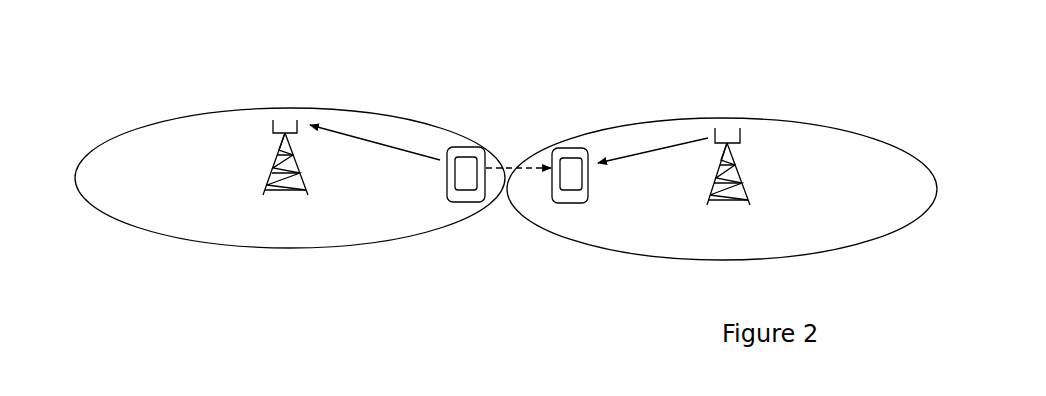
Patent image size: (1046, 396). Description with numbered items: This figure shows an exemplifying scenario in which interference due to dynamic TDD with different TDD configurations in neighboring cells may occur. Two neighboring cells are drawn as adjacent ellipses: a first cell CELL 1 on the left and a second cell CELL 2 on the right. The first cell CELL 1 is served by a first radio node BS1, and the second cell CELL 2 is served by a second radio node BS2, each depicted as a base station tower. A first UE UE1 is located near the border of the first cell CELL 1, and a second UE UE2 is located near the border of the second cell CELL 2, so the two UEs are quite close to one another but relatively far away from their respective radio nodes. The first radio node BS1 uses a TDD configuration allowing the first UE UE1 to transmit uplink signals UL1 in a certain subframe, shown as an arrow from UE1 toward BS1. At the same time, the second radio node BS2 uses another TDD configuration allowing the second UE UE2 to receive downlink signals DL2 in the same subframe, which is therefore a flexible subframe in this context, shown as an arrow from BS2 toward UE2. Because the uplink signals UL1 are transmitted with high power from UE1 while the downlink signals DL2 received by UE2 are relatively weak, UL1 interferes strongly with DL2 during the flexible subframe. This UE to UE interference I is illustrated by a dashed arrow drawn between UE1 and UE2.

The first cell CELL 1 is at (193, 108).
The second cell CELL 2 is at (827, 120).
The first radio node BS1 is at (272, 159).
The second radio node BS2 is at (745, 180).
The first UE UE1 is at (447, 175).
The second UE UE2 is at (588, 187).
The uplink signals UL1 is at (395, 135).
The downlink signals DL2 is at (655, 142).
The UE to UE interference I is at (510, 145).